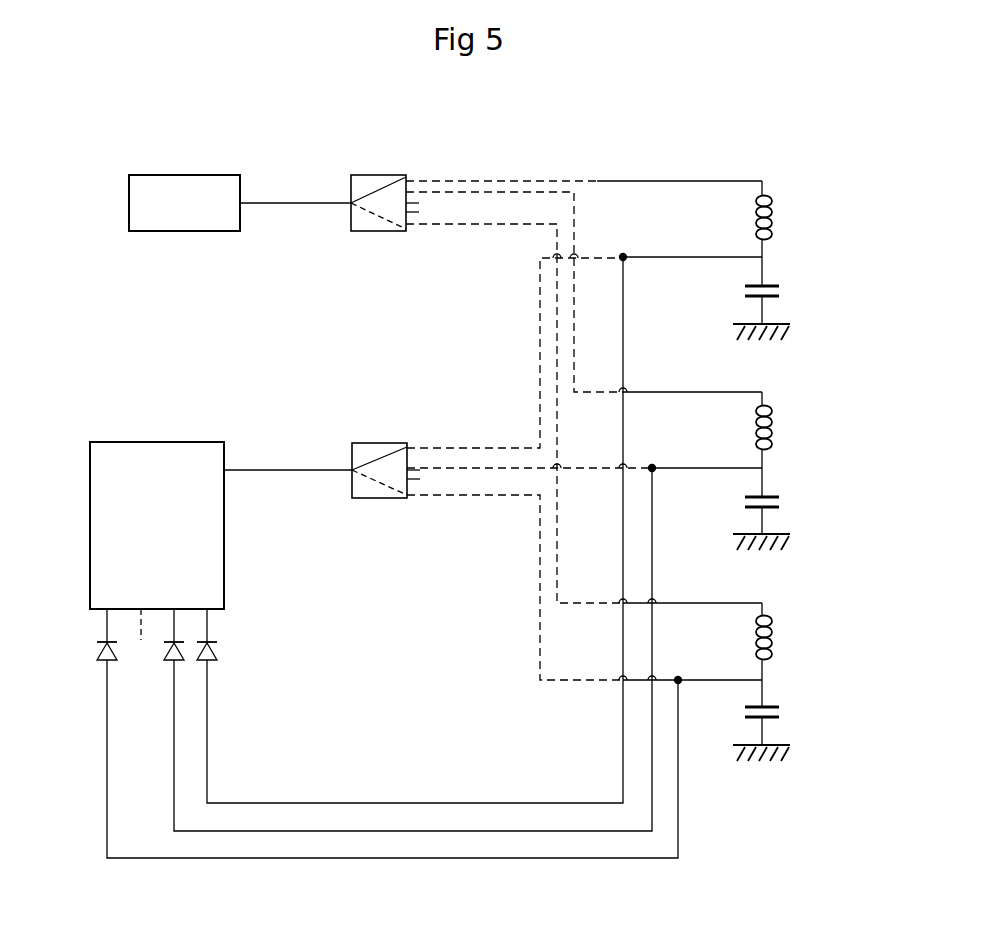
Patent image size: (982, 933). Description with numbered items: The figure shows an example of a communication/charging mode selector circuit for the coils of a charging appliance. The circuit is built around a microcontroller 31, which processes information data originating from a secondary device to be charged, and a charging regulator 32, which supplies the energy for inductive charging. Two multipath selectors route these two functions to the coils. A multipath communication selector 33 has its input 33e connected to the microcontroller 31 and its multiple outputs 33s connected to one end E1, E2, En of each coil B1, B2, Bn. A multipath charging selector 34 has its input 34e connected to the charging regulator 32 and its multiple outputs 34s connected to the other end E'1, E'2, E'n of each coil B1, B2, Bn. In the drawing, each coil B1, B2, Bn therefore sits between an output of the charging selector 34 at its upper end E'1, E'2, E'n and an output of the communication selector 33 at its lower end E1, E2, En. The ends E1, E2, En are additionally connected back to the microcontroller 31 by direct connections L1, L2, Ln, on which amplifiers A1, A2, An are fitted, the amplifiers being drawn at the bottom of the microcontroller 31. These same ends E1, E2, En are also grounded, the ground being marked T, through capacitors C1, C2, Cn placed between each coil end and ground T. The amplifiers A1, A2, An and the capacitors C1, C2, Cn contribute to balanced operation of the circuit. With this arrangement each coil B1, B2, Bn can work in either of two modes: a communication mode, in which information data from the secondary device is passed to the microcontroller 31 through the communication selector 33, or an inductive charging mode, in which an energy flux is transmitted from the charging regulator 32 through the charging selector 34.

The microcontroller 31 is at (172, 539).
The charging regulator 32 is at (199, 216).
The multipath communication selector 33 is at (370, 443).
The input of the communication selector 33e is at (351, 471).
The outputs of the communication selector 33s is at (413, 474).
The multipath charging selector 34 is at (370, 175).
The input of the charging selector 34e is at (350, 204).
The outputs of the charging selector 34s is at (412, 207).
The amplifier A1 is at (210, 661).
The amplifier A2 is at (171, 661).
The amplifier An is at (104, 661).
The direct connection L1 is at (290, 803).
The direct connection L2 is at (365, 831).
The direct connection Ln is at (428, 858).
The other end of coil E'1 is at (807, 169).
The other end of coil E'2 is at (807, 379).
The other end of coil E'n is at (807, 589).
The end of coil E1 is at (762, 257).
The end of coil E2 is at (762, 468).
The end of coil En is at (762, 680).
The coil B1 is at (784, 227).
The coil B2 is at (784, 437).
The coil Bn is at (784, 648).
The capacitor C1 is at (778, 302).
The capacitor C2 is at (778, 512).
The capacitor Cn is at (778, 723).
The ground T is at (740, 323).